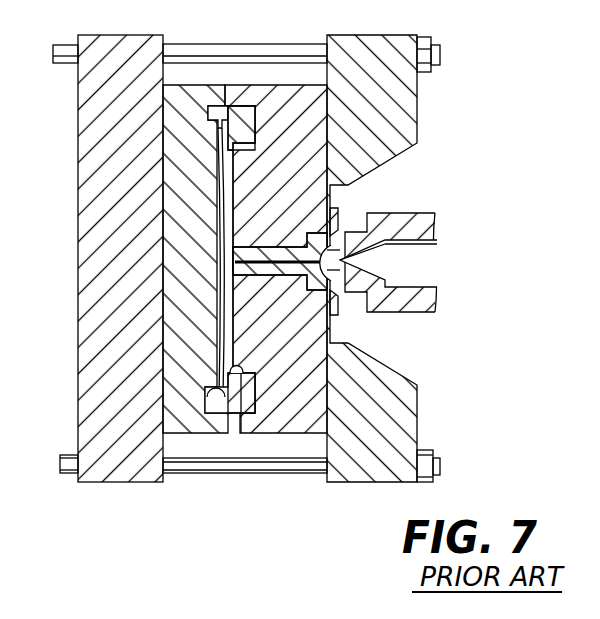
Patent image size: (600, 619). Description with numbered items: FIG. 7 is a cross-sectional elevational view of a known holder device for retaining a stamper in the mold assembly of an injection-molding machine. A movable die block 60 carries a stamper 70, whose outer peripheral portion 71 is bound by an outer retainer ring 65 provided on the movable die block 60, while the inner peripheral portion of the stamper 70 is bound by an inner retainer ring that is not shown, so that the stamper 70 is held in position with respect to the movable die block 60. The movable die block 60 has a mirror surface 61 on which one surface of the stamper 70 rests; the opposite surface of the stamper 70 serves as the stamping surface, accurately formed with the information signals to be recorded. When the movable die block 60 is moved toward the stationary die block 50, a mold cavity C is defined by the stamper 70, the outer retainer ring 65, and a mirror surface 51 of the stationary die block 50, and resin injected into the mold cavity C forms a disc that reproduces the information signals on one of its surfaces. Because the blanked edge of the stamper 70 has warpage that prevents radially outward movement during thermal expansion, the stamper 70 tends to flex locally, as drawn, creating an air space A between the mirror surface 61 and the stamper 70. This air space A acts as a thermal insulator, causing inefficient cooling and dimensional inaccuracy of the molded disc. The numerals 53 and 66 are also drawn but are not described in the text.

The stationary die block 50 is at (298, 408).
The mirror surface of the stationary die block 51 is at (237, 340).
The pin 53 is at (240, 382).
The movable die block 60 is at (176, 407).
The mirror surface of the movable die block 61 is at (216, 229).
The outer retainer ring 65 is at (222, 108).
The seal insert 66 is at (235, 122).
The stamper 70 is at (235, 329).
The outer peripheral portion of the stamper 71 is at (210, 405).
The air space A is at (215, 207).
The mold cavity C is at (225, 348).